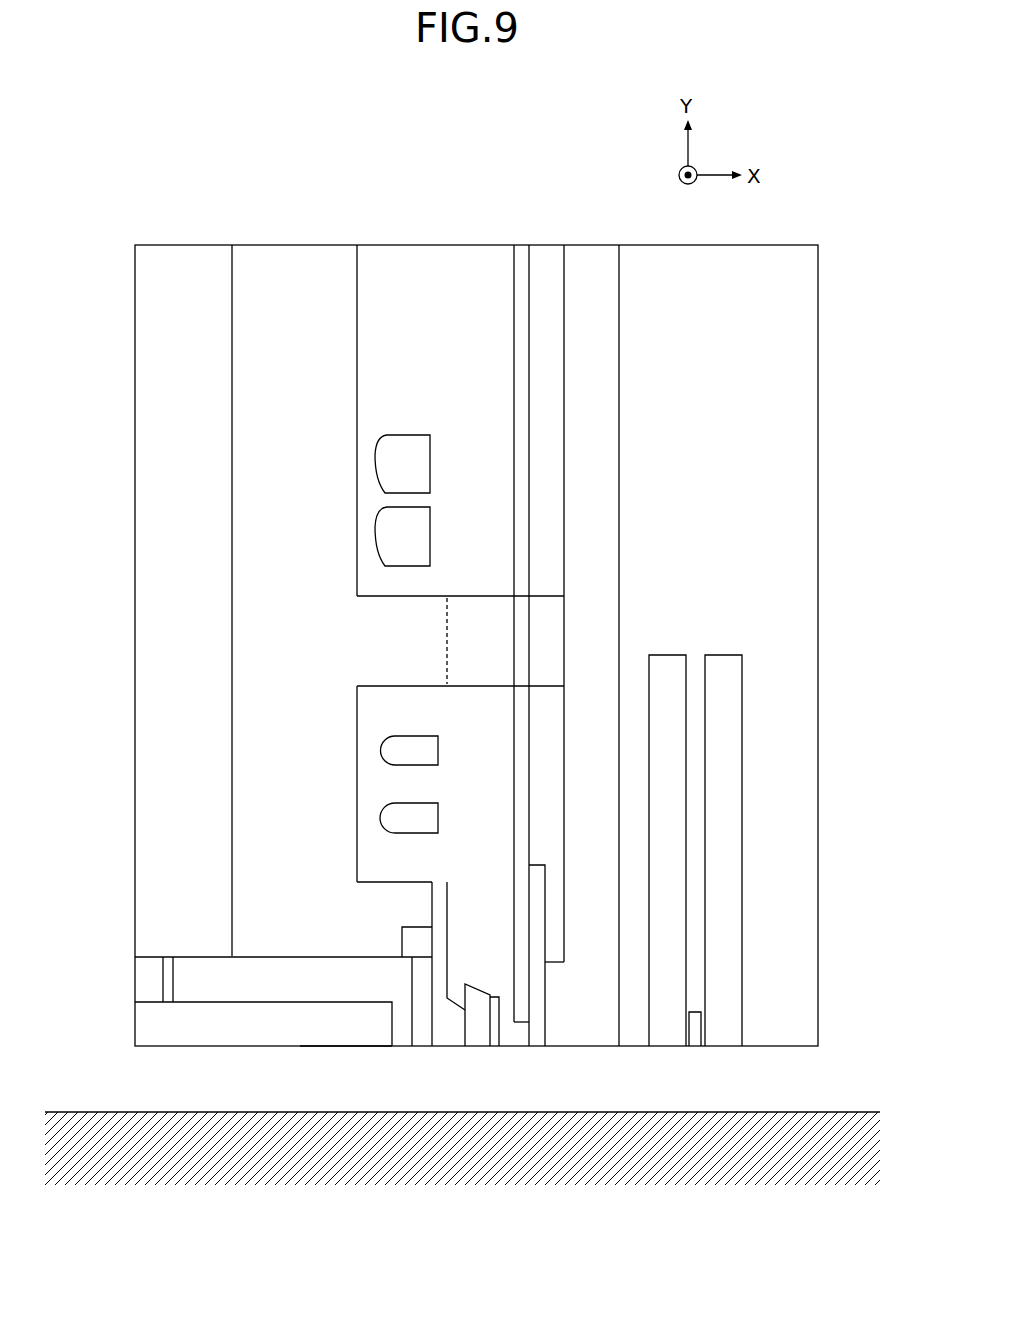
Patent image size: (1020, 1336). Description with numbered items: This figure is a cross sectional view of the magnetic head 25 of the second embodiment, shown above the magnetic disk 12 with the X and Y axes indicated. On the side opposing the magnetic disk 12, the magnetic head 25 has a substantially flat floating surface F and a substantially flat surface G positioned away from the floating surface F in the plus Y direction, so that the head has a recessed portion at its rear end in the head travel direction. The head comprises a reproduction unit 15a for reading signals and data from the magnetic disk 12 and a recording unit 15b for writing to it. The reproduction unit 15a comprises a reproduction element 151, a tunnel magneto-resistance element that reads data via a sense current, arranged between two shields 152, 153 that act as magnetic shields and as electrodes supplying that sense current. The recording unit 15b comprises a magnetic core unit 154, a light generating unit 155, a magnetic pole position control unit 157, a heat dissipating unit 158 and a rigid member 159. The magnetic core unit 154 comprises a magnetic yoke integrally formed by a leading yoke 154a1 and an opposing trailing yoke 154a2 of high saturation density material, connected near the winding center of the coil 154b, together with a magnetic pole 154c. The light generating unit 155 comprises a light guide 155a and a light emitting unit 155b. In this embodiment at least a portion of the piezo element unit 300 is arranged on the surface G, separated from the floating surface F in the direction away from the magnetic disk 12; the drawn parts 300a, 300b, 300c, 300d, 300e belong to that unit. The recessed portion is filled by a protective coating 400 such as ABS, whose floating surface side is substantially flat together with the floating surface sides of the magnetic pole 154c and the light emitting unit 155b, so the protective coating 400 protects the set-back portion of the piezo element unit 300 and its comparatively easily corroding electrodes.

The magnetic head 25 is at (818, 352).
The magnetic core unit 154 is at (224, 463).
The trailing yoke 154a2 is at (292, 245).
The leading yoke 154a1 is at (585, 245).
The coil 154b is at (414, 435).
The magnetic pole 154c is at (447, 1047).
The light guide 155a is at (513, 430).
The light generating unit 155 is at (523, 1048).
The light emitting unit 155b is at (522, 1034).
The magnetic pole position control unit 157 is at (478, 1047).
The heat dissipating unit 158 is at (495, 1047).
The rigid member 159 is at (535, 1047).
The reproduction unit 15a is at (751, 717).
The recording unit 15b is at (628, 437).
The reproduction element 151 is at (694, 1047).
The shield 152 is at (724, 1047).
The shield 153 is at (663, 1047).
The piezo element unit 300 is at (127, 962).
The base portion 300a is at (265, 1047).
The support 300b is at (190, 1047).
The side wall 300c is at (420, 1047).
The end portion 300d is at (136, 1047).
The engaging portion 300e is at (402, 942).
The protective coating 400 is at (338, 1047).
The magnetic disk 12 is at (850, 1112).
The floating surface F is at (789, 1052).
The surface G is at (313, 1010).